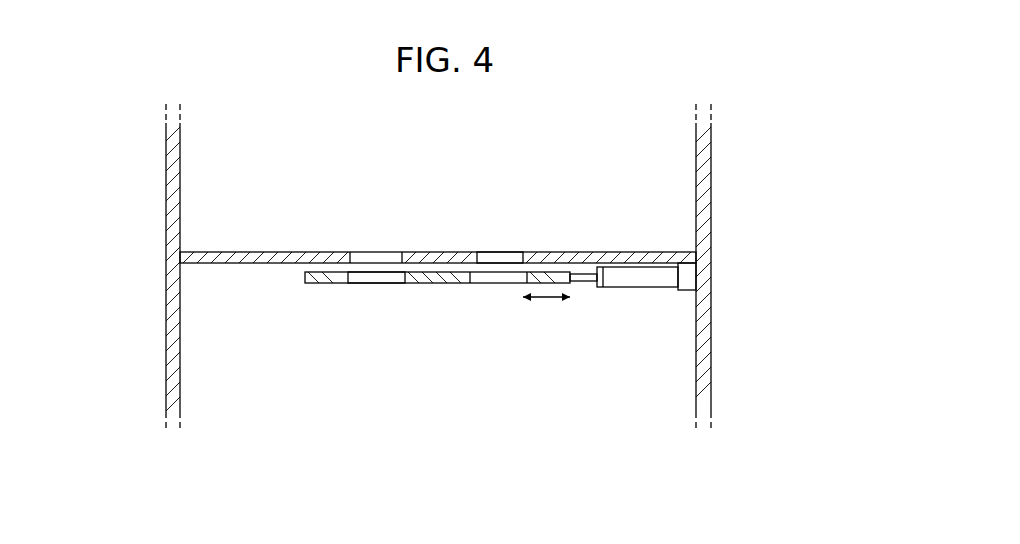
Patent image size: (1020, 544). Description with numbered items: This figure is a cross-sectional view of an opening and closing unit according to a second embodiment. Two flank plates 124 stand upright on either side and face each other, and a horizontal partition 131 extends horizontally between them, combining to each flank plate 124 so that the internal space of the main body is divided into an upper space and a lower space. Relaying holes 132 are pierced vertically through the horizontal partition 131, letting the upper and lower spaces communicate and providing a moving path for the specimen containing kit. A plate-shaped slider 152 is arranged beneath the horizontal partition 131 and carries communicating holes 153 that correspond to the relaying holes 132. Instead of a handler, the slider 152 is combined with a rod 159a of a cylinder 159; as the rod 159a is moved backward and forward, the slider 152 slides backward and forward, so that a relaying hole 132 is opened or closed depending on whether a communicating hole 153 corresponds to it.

The flank plate 124 is at (165, 195).
The horizontal partition 131 is at (609, 257).
The relaying hole 132 is at (502, 252).
The slider 152 is at (436, 284).
The communicating hole 153 is at (371, 283).
The rod 159a is at (588, 284).
The cylinder 159 is at (648, 287).